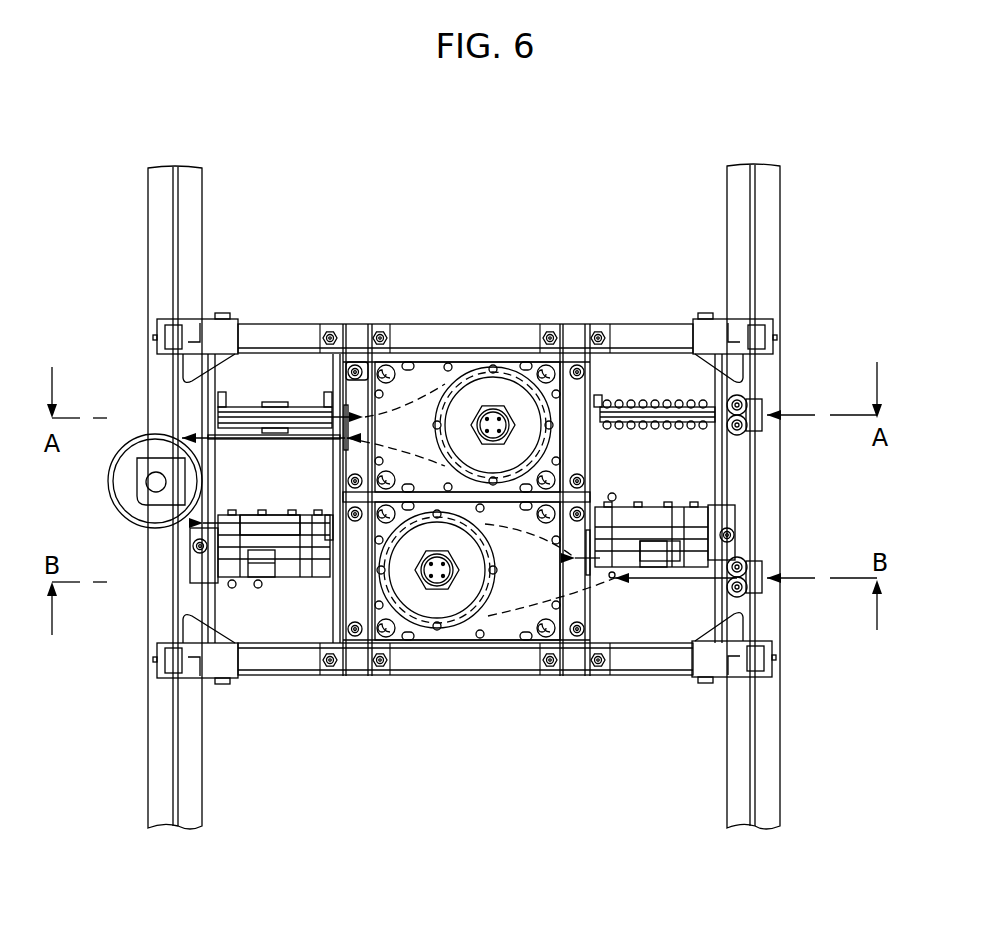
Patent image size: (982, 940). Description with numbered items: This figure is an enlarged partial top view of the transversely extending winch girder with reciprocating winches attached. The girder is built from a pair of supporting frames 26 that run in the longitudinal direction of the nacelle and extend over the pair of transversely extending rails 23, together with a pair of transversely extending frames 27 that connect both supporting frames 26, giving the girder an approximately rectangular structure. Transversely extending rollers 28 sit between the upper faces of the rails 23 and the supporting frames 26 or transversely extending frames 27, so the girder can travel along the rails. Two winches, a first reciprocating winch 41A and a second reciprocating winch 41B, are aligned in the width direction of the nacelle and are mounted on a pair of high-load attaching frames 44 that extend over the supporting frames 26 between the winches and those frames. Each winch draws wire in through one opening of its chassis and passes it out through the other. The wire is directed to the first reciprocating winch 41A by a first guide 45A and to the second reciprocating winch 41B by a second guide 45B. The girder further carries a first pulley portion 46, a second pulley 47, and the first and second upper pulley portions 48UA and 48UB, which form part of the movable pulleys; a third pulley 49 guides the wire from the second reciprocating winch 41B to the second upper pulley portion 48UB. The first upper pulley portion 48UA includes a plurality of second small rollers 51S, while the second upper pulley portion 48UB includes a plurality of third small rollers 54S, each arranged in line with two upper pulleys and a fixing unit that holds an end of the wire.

The transversely extending rails 23 is at (158, 200).
The supporting frames 26 is at (256, 328).
The transversely extending frames 27 is at (183, 602).
The transversely extending rollers 28 is at (172, 334).
The first reciprocating winch 41A is at (467, 636).
The second reciprocating winch 41B is at (467, 361).
The high-load attaching frames 44 is at (358, 358).
The first guide 45A is at (750, 590).
The second guide 45B is at (750, 408).
The first pulley portion 46 is at (648, 400).
The second pulley 47 is at (305, 408).
The first upper pulley portion 48UA is at (636, 507).
The second upper pulley portion 48UB is at (265, 578).
The third pulley 49 is at (123, 488).
The second small rollers 51S is at (665, 563).
The third small rollers 54S is at (262, 515).